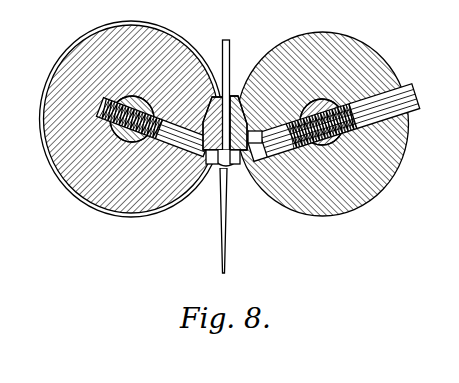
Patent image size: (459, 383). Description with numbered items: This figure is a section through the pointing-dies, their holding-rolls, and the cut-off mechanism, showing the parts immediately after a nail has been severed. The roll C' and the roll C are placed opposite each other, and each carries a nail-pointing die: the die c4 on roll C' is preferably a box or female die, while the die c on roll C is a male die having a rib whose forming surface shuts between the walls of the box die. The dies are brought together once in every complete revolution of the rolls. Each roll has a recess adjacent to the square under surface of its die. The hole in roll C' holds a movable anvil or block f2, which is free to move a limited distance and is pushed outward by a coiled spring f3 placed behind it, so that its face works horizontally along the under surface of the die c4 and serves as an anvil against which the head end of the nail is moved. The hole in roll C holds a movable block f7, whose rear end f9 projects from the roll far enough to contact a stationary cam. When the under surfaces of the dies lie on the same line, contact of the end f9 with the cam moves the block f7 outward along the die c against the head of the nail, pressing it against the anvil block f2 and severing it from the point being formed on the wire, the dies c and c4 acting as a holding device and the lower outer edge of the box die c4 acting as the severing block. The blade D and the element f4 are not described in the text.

The roll C' is at (131, 110).
The roll C is at (323, 113).
The nail-pointing die c is at (238, 95).
The nail-pointing die c4 is at (212, 96).
The blade D is at (232, 60).
The movable anvil or block f2 is at (190, 142).
The rear end of movable block f9 is at (415, 98).
The coiled spring f3 is at (234, 168).
The nut f4 is at (213, 166).
The movable block f7 is at (263, 142).